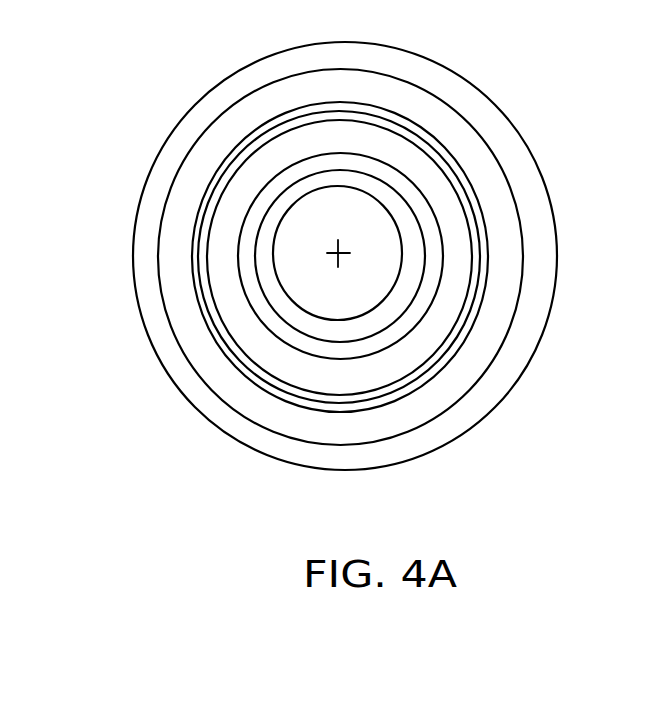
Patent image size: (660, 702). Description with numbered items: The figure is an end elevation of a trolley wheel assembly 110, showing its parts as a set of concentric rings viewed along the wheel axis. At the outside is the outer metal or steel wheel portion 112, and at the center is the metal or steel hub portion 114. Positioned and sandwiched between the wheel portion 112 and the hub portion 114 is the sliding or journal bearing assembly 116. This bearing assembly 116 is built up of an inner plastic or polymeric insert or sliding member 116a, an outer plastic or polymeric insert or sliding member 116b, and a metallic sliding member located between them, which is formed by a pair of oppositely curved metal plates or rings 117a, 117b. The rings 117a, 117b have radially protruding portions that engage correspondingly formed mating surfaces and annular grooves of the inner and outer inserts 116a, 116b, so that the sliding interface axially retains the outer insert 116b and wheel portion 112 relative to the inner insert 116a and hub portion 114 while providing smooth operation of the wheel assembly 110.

The trolley wheel assembly 110 is at (148, 96).
The wheel portion 112 is at (429, 78).
The hub portion 114 is at (382, 338).
The journal bearing assembly 116 is at (502, 313).
The inner insert 116a is at (225, 233).
The outer insert 116b is at (478, 172).
The metal ring 117a is at (245, 358).
The metal ring 117b is at (487, 220).